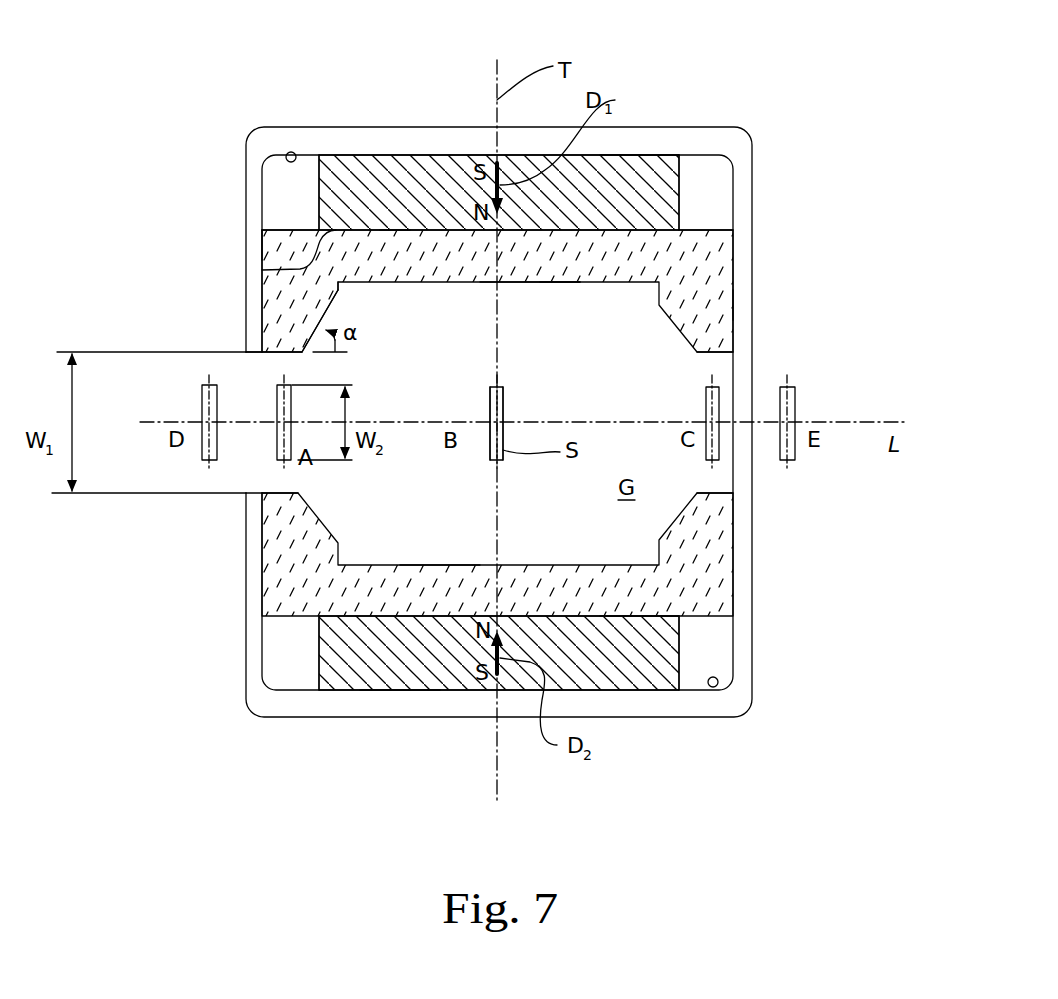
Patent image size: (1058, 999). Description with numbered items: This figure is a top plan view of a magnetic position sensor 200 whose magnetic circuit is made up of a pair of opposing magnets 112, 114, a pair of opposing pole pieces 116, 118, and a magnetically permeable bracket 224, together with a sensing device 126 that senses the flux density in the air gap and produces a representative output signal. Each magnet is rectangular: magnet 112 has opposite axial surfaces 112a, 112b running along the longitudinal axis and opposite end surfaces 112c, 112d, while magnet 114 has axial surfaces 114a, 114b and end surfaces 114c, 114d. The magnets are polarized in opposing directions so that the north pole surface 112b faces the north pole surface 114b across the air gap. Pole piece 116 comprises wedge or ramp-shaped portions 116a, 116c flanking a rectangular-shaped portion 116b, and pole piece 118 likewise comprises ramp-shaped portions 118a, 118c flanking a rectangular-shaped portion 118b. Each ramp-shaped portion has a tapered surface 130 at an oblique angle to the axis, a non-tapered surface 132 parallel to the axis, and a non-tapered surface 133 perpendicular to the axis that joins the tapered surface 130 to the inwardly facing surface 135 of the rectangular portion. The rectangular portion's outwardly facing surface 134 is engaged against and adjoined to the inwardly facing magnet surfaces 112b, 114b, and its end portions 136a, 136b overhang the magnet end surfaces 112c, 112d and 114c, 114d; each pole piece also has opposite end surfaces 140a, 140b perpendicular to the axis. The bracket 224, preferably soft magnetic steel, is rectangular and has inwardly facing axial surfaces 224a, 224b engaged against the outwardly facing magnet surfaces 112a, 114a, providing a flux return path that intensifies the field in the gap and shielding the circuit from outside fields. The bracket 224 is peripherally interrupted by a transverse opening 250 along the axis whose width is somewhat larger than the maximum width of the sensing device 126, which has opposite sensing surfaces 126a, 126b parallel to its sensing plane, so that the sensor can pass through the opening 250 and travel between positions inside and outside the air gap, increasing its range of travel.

The magnetic position sensor 200 is at (416, 359).
The bracket 224 is at (203, 212).
The inwardly facing axial surface 224a is at (291, 151).
The inwardly facing axial surface 224b is at (715, 688).
The magnet 112 is at (683, 188).
The axial surface 112a is at (650, 155).
The axial surface 112b is at (262, 270).
The end surface 112c is at (318, 183).
The end surface 112d is at (680, 170).
The magnet 114 is at (683, 660).
The axial surface 114a is at (395, 690).
The axial surface 114b is at (672, 616).
The end surface 114c is at (319, 652).
The end surface 114d is at (683, 638).
The pole piece 116 is at (740, 270).
The ramp-shaped portion 116a is at (277, 358).
The rectangular-shaped portion 116b is at (528, 285).
The ramp-shaped portion 116c is at (717, 356).
The pole piece 118 is at (737, 540).
The ramp-shaped portion 118a is at (250, 494).
The rectangular-shaped portion 118b is at (434, 563).
The ramp-shaped portion 118c is at (720, 491).
The sensing device 126 is at (200, 402).
The sensing surface 126a is at (503, 403).
The sensing surface 126b is at (490, 400).
The tapered surface 130 is at (305, 352).
The non-tapered surface 132 is at (246, 352).
The non-tapered surface 133 is at (340, 288).
The outwardly facing surface 134 is at (392, 229).
The inwardly facing surface 135 is at (557, 284).
The end portion 136a is at (287, 230).
The end portion 136b is at (700, 230).
The end surface 140a is at (262, 243).
The end surface 140b is at (735, 303).
The transverse opening 250 is at (237, 455).